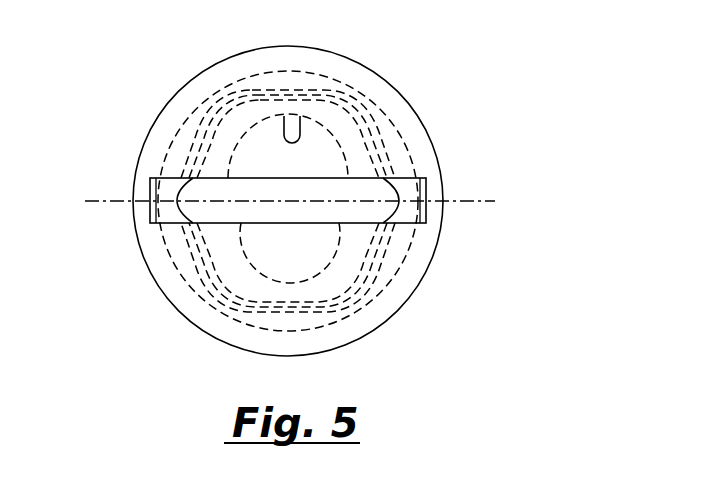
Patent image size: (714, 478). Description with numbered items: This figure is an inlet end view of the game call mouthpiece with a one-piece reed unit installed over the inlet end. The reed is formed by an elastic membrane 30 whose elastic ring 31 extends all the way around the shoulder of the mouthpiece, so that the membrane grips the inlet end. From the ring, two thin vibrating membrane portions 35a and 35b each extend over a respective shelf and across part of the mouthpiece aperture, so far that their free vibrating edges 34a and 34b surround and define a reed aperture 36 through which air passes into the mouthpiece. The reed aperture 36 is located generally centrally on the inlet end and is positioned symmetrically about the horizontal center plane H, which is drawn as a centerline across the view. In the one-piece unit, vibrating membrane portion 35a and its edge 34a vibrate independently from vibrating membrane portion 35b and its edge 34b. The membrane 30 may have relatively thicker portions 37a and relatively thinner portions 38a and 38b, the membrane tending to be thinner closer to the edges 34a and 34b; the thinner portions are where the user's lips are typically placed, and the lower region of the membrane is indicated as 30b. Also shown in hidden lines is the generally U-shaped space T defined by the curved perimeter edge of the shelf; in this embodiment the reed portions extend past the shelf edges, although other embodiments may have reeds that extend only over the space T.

The membrane 30 is at (328, 126).
The lower portion of closure cap 30b is at (327, 270).
The elastic ring 31 is at (226, 340).
The vibrating edge 34a is at (283, 178).
The vibrating edge 34b is at (303, 225).
The vibrating membrane portion 35a is at (277, 143).
The vibrating membrane portion 35b is at (287, 278).
The reed aperture 36 is at (237, 192).
The relatively thicker portion 37a is at (315, 80).
The relatively thinner portion 38a is at (308, 170).
The relatively thinner portion 38b is at (270, 230).
The generally U-shaped space T is at (300, 130).
The horizontal center plane H is at (290, 205).